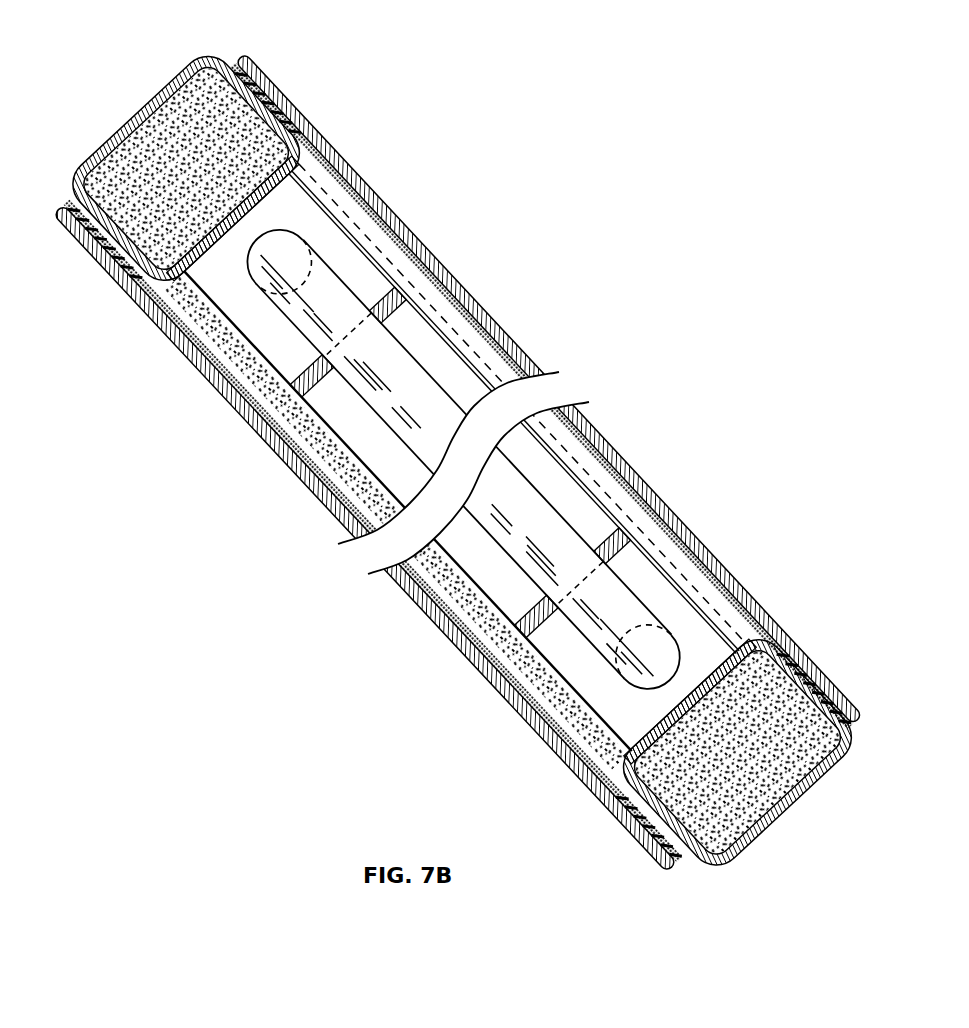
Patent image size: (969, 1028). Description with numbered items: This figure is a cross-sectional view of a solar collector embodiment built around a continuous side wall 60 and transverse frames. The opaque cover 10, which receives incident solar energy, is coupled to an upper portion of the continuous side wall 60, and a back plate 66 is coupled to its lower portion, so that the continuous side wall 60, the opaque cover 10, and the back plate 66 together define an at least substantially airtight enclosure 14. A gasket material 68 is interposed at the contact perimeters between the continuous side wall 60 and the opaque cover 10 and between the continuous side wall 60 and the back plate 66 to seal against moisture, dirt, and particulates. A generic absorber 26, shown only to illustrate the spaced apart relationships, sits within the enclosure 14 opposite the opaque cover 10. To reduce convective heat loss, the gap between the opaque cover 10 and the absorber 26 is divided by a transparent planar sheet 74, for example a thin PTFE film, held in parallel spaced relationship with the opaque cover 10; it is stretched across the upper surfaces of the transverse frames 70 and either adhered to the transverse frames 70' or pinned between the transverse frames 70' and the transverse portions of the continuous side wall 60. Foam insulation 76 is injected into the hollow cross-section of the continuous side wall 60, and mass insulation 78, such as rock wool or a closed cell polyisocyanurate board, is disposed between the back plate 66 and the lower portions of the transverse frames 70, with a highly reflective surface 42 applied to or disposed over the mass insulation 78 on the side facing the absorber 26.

The opaque cover 10 is at (507, 325).
The enclosure 14 is at (330, 234).
The absorber 26 is at (249, 264).
The highly reflective surface 42 is at (242, 317).
The continuous side wall 60 is at (123, 127).
The back plate 66 is at (314, 480).
The gasket material 68 is at (243, 62).
The transverse frames 70 is at (460, 457).
The transverse frames 70' is at (462, 460).
The transparent planar sheet 74 is at (456, 330).
The foam insulation 76 is at (187, 118).
The mass insulation 78 is at (248, 353).